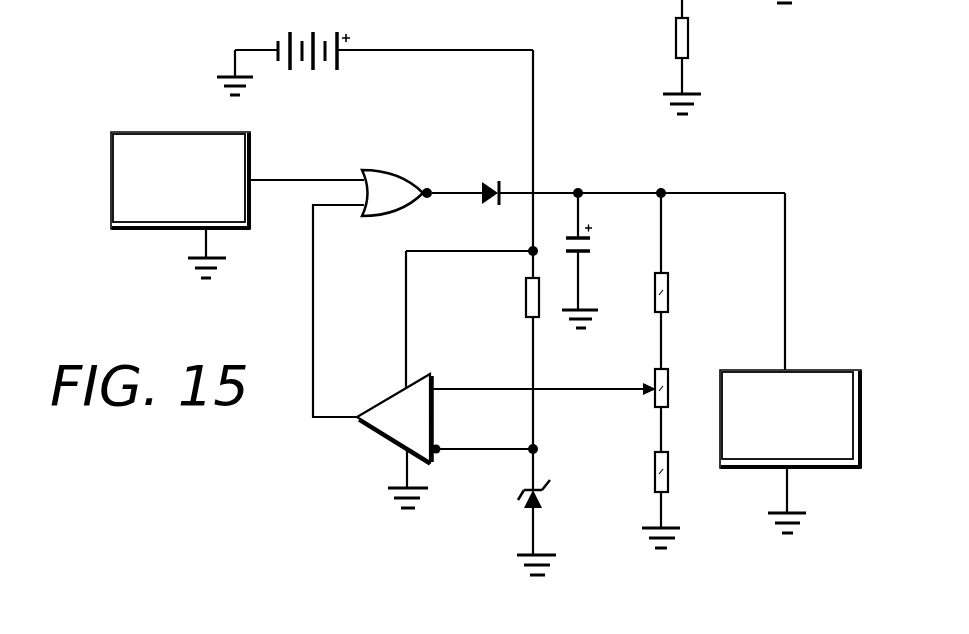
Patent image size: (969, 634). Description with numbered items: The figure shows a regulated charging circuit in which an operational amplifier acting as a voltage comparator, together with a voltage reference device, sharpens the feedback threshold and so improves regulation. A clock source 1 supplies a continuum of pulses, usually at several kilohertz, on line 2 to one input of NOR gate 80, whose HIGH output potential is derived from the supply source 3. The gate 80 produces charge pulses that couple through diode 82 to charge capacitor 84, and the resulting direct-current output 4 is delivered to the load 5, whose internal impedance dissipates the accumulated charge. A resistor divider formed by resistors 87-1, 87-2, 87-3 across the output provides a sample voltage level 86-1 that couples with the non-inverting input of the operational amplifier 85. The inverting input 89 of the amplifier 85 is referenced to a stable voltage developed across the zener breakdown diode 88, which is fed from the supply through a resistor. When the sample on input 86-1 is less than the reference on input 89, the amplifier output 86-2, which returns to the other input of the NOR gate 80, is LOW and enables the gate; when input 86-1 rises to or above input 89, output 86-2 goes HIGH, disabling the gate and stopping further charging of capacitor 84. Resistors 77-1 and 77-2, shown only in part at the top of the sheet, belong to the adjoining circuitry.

The clock source 1 is at (212, 150).
The line 2 is at (301, 179).
The source 3 is at (280, 45).
The DC output line 4 is at (787, 218).
The load 5 is at (815, 390).
The resistor 77-1 is at (694, 6).
The resistor 77-2 is at (688, 42).
The NOR gate 80 is at (405, 183).
The diode 82 is at (497, 182).
The capacitor 84 is at (590, 238).
The comparator amplifier 85 is at (394, 401).
The sample voltage level 86-1 is at (632, 393).
The output 86-2 is at (312, 350).
The resistor divider 87-1 is at (669, 381).
The resistor divider 87-2 is at (670, 465).
The resistor divider 87-3 is at (664, 299).
The zener breakdown diode 88 is at (550, 496).
The inverting input 89 is at (452, 452).